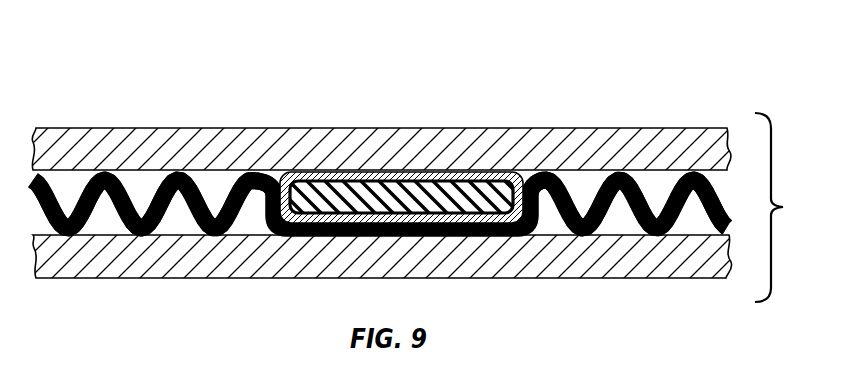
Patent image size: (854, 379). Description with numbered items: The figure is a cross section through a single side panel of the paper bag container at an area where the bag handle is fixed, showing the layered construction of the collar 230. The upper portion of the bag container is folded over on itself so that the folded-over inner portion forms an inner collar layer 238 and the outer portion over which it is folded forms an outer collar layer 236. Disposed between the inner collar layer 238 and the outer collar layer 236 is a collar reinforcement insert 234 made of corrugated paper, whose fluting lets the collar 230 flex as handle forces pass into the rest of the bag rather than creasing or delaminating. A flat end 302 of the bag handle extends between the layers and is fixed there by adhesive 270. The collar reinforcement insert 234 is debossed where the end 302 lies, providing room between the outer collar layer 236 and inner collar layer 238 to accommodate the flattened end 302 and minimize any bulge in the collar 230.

The collar 230 is at (787, 207).
The collar reinforcement insert 234 is at (593, 236).
The outer collar layer 236 is at (680, 258).
The inner collar layer 238 is at (664, 143).
The adhesive 270 is at (525, 175).
The end 302 is at (340, 182).